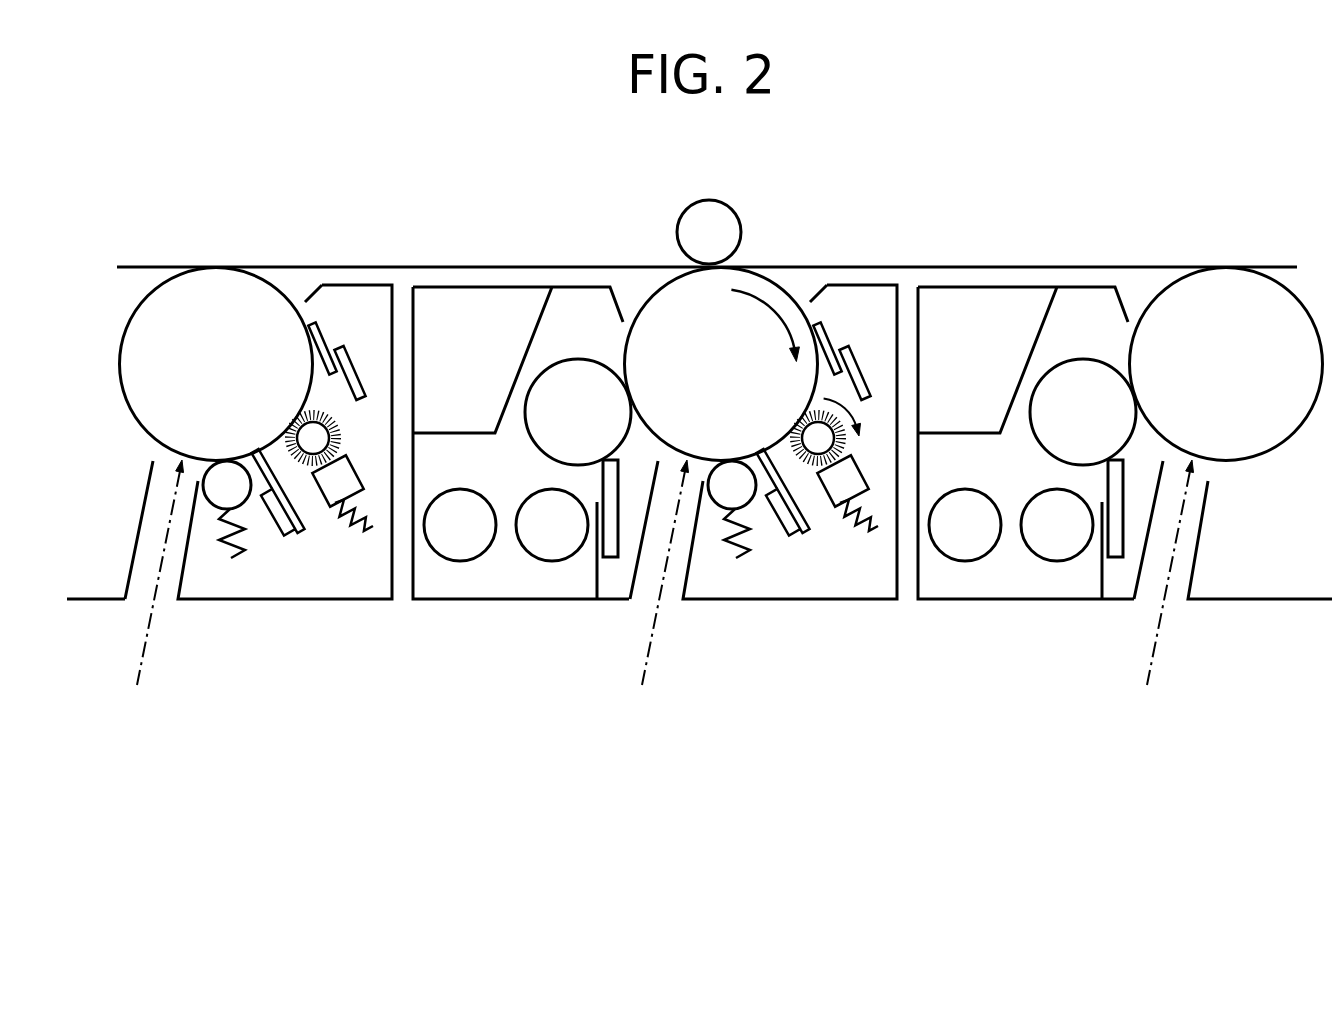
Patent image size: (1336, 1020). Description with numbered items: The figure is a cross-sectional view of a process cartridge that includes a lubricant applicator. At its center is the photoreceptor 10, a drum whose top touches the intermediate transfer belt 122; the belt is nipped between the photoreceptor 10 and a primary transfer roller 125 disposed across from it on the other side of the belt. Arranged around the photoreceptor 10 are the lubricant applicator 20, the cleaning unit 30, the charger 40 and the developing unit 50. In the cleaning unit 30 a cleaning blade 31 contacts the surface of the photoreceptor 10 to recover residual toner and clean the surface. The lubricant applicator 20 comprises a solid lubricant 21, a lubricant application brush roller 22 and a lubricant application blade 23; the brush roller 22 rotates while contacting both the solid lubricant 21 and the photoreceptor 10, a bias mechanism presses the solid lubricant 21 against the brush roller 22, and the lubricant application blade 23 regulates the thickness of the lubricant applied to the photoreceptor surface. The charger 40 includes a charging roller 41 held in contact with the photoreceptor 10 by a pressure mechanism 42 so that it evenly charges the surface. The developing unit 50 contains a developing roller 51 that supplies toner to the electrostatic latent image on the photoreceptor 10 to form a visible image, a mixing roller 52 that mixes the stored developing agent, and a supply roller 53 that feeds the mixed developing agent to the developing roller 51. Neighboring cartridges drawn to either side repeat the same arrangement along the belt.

The photoreceptor 10 is at (652, 292).
The lubricant applicator 20 is at (830, 551).
The solid lubricant 21 is at (826, 503).
The lubricant application brush roller 22 is at (846, 441).
The lubricant application blade 23 is at (792, 534).
The cleaning unit 30 is at (865, 361).
The cleaning blade 31 is at (829, 336).
The charger 40 is at (731, 617).
The charging roller 41 is at (732, 462).
The pressure mechanism 42 is at (736, 558).
The developing unit 50 is at (498, 617).
The developing roller 51 is at (577, 360).
The mixing roller 52 is at (486, 499).
The supply roller 53 is at (552, 561).
The intermediate transfer belt 122 is at (372, 266).
The primary transfer roller 125 is at (712, 200).